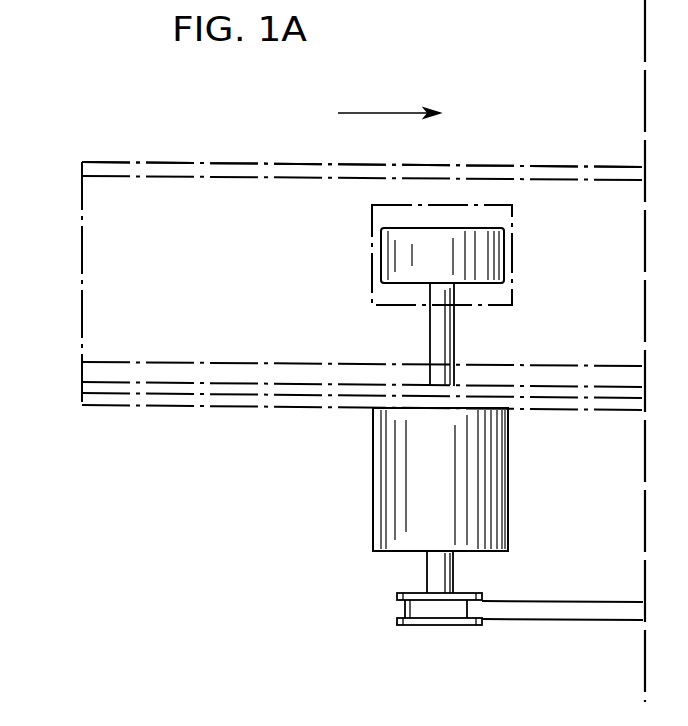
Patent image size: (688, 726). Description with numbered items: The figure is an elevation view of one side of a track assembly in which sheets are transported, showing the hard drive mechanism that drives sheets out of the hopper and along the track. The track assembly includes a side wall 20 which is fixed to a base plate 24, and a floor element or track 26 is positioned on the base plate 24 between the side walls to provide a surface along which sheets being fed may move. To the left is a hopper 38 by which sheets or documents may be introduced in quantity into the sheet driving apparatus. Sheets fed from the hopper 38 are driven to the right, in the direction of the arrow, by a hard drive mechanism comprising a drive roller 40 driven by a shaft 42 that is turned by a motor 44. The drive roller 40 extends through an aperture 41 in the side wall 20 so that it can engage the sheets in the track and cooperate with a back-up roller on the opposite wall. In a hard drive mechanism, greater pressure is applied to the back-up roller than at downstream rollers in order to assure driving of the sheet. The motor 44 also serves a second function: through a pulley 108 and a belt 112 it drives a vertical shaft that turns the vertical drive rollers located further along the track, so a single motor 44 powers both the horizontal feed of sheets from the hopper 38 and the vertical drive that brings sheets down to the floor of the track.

The side wall 20 is at (586, 167).
The hopper 38 is at (209, 161).
The floor element or track 26 is at (108, 361).
The base plate 24 is at (176, 407).
The drive roller 40 is at (392, 258).
The aperture 41 is at (513, 288).
The shaft 42 is at (446, 330).
The motor 44 is at (386, 483).
The pulley 108 is at (421, 626).
The belt 112 is at (586, 614).